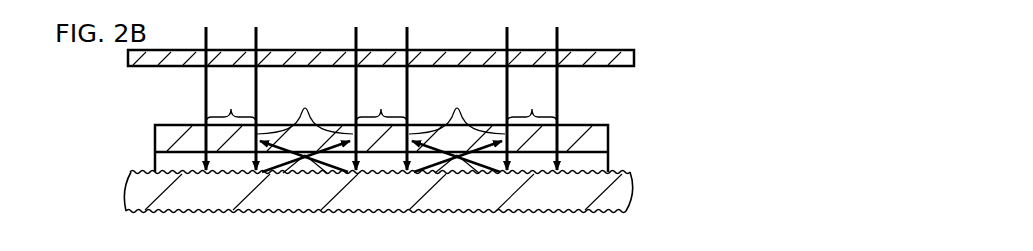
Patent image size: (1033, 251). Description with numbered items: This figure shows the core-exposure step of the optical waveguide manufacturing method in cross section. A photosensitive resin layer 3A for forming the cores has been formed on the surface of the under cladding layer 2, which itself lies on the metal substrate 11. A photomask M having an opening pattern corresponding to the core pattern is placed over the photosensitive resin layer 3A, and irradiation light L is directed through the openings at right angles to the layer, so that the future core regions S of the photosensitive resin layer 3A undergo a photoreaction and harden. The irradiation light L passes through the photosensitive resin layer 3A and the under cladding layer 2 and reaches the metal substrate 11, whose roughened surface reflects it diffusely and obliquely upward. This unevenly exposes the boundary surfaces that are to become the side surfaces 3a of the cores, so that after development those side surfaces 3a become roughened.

The irradiation light L is at (409, 42).
The photomask M is at (632, 59).
The future core regions S is at (381, 101).
The side surfaces 3a is at (381, 127).
The photosensitive resin layer 3A is at (595, 139).
The under cladding layer 2 is at (595, 163).
The metal substrate 11 is at (617, 193).